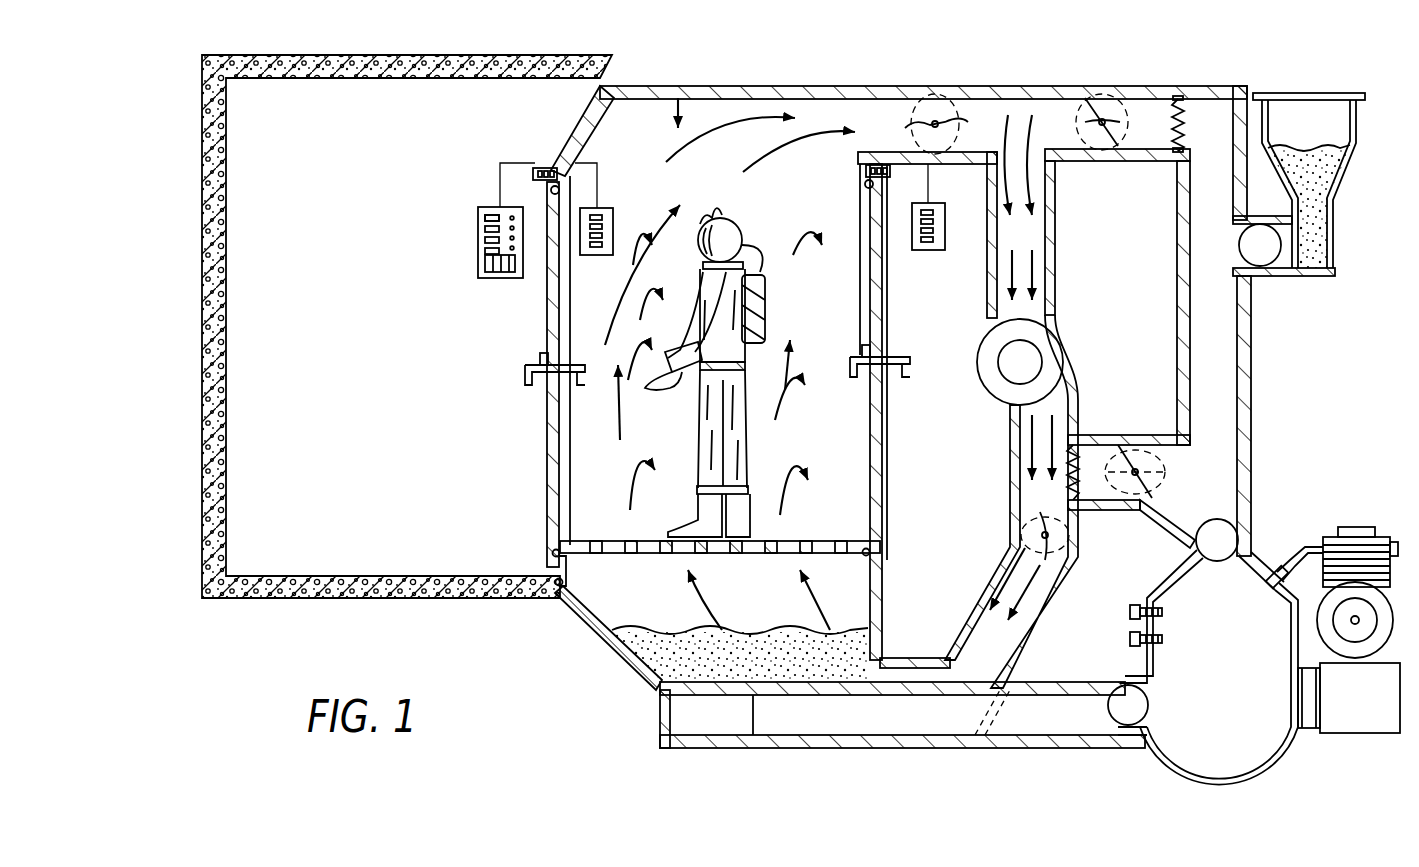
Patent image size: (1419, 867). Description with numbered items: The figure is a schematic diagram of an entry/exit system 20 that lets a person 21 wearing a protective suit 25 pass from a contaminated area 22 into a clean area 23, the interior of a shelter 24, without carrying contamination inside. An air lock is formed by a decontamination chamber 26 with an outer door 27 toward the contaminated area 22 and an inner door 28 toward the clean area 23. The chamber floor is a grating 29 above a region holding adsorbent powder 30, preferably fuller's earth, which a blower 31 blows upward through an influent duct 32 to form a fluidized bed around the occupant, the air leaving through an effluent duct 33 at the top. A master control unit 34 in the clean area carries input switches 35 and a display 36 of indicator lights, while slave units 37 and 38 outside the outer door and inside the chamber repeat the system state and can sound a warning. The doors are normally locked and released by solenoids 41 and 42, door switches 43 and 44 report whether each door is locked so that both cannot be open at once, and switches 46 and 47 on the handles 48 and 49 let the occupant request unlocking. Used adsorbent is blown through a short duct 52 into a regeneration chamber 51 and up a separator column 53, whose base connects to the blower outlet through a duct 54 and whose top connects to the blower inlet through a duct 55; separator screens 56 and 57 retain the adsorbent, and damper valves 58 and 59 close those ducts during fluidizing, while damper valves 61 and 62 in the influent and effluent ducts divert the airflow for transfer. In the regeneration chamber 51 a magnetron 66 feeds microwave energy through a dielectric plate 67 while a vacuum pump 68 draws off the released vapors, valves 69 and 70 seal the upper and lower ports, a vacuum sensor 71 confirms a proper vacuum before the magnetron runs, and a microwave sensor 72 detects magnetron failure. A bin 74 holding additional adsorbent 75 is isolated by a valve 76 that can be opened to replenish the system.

The entry/exit system 20 is at (542, 628).
The person 21 is at (700, 392).
The contaminated area 22 is at (1333, 381).
The clean area 23 is at (308, 351).
The shelter 24 is at (320, 598).
The protective suit 25 is at (702, 222).
The decontamination chamber 26 is at (682, 98).
The outer door 27 is at (885, 535).
The inner door 28 is at (548, 488).
The grating 29 is at (845, 540).
The adsorbent powder 30 is at (650, 652).
The blower 31 is at (992, 393).
The influent duct 32 is at (905, 658).
The effluent duct 33 is at (878, 117).
The master control unit 34 is at (478, 238).
The input switches 35 is at (505, 270).
The display 36 is at (512, 210).
The slave unit 37 is at (938, 204).
The slave unit 38 is at (613, 225).
The solenoid 41 is at (873, 184).
The solenoid 42 is at (550, 167).
The door switch 43 is at (866, 171).
The door switch 44 is at (559, 190).
The switch 46 is at (860, 357).
The switch 47 is at (540, 358).
The handle 48 is at (857, 377).
The handle 49 is at (527, 380).
The regeneration chamber 51 is at (1220, 666).
The duct 52 is at (1048, 748).
The separator column 53 is at (1180, 344).
The duct 54 is at (1155, 455).
The duct 55 is at (1165, 100).
The separator screen 56 is at (1076, 458).
The separator screen 57 is at (1181, 120).
The damper valve 58 is at (1120, 510).
The damper valve 59 is at (1105, 100).
The damper valve 61 is at (1040, 532).
The damper valve 62 is at (940, 100).
The magnetron 66 is at (1360, 698).
The dielectric plate 67 is at (1296, 703).
The vacuum pump 68 is at (1322, 540).
The valve 69 is at (1217, 519).
The valve 70 is at (1126, 725).
The vacuum sensor 71 is at (1133, 605).
The microwave sensor 72 is at (1130, 639).
The bin 74 is at (1335, 172).
The additional adsorbent 75 is at (1320, 226).
The valve 76 is at (1280, 265).